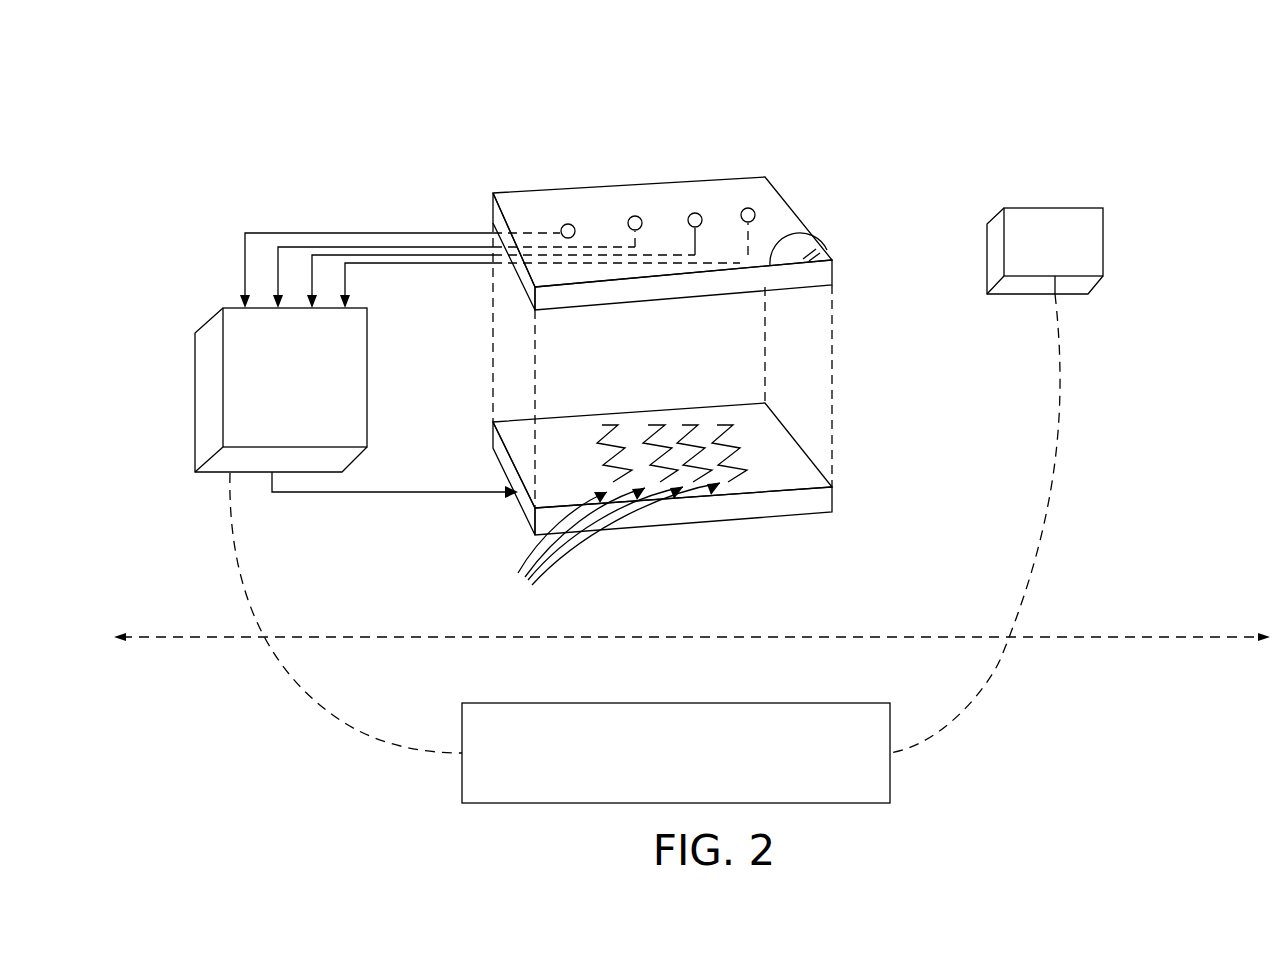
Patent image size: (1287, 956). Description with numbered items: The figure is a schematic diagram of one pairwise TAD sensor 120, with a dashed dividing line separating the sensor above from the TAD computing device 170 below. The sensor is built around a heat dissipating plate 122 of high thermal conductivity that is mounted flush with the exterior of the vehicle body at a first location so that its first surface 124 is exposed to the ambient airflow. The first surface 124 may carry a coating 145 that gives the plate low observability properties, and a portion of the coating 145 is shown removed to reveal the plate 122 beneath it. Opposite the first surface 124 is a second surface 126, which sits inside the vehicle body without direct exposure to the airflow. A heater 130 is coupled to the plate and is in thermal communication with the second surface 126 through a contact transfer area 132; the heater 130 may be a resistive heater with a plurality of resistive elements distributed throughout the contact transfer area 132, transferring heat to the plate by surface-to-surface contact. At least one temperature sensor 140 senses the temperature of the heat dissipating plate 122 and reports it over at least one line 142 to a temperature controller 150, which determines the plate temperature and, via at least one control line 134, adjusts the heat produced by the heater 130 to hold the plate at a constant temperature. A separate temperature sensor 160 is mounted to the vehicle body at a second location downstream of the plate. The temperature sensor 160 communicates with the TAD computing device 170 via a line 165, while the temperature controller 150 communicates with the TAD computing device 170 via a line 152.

The pairwise TAD sensor 120 is at (660, 42).
The heat dissipating plate 122 is at (650, 200).
The first surface 124 is at (673, 193).
The second surface 126 is at (790, 292).
The heater 130 is at (815, 497).
The contact transfer area 132 is at (807, 472).
The control line 134 is at (412, 491).
The temperature sensor 140 is at (567, 224).
The line 142 is at (385, 232).
The coating 145 is at (782, 232).
The temperature controller 150 is at (282, 417).
The line 152 is at (330, 708).
The temperature sensor 160 is at (1051, 199).
The line 165 is at (983, 690).
The TAD computing device 170 is at (813, 766).